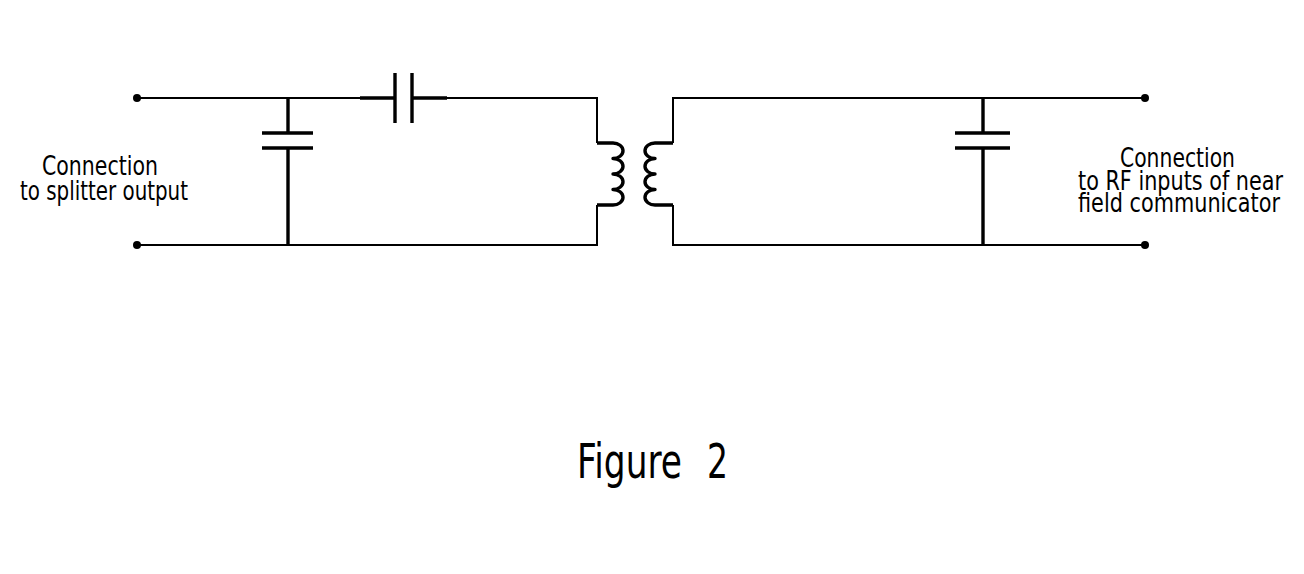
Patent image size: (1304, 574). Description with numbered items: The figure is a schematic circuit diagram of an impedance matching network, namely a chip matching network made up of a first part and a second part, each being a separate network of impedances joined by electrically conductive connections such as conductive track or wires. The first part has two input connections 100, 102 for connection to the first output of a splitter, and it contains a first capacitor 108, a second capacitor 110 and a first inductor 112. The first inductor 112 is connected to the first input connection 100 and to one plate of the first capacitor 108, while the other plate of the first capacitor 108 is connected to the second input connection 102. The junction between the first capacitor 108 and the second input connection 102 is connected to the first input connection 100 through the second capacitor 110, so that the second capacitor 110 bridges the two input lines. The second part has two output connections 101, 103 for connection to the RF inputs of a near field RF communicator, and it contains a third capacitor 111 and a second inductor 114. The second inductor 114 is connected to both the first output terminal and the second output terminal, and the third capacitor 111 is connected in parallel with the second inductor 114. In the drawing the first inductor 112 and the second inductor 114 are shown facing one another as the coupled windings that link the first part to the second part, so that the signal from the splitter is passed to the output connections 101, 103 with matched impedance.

The first input connection 100 is at (137, 245).
The output connection 101 is at (1145, 245).
The second input connection 102 is at (137, 98).
The output connection 103 is at (1145, 98).
The first capacitor 108 is at (412, 80).
The second capacitor 110 is at (295, 148).
The third capacitor 111 is at (965, 148).
The first inductor 112 is at (615, 205).
The second inductor 114 is at (655, 205).